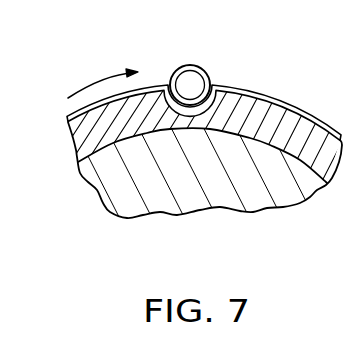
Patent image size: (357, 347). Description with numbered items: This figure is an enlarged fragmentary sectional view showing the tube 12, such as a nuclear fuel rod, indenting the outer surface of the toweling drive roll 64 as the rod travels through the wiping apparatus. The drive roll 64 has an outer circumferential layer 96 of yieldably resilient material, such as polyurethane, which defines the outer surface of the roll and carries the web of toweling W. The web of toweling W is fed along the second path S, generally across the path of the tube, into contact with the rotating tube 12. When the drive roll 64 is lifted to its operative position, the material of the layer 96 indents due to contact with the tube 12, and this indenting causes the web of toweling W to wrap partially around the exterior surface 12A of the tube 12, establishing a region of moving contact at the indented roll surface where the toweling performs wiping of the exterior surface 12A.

The tube 12 is at (174, 72).
The exterior surface 12A is at (199, 66).
The web of toweling W is at (251, 85).
The outer circumferential layer 96 is at (305, 127).
The toweling drive roll 64 is at (263, 208).
The second path S is at (108, 80).